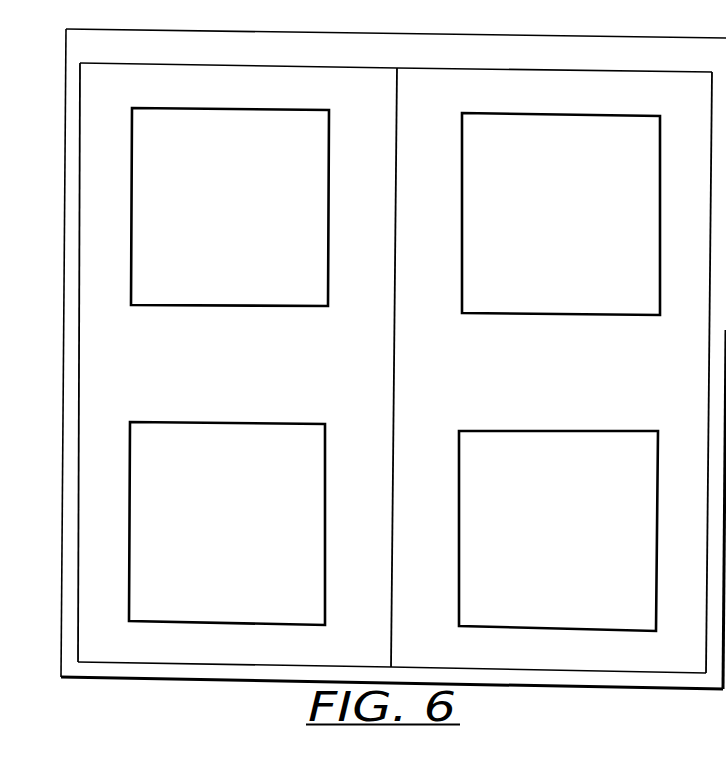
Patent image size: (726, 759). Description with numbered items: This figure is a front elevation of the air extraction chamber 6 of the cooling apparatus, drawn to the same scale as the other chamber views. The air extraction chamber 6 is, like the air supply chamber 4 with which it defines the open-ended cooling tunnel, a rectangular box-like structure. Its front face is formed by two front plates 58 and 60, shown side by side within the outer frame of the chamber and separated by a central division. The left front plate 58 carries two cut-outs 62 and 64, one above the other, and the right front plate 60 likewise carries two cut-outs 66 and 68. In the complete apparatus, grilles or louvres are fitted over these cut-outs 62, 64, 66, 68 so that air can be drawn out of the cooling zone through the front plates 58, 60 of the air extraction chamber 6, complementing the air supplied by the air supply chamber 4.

The air supply chamber 4 is at (7, 198).
The air extraction chamber 6 is at (59, 408).
The front plate 58 is at (236, 376).
The front plate 60 is at (574, 380).
The cut-out 62 is at (236, 216).
The cut-out 64 is at (236, 535).
The cut-out 66 is at (579, 222).
The cut-out 68 is at (568, 544).